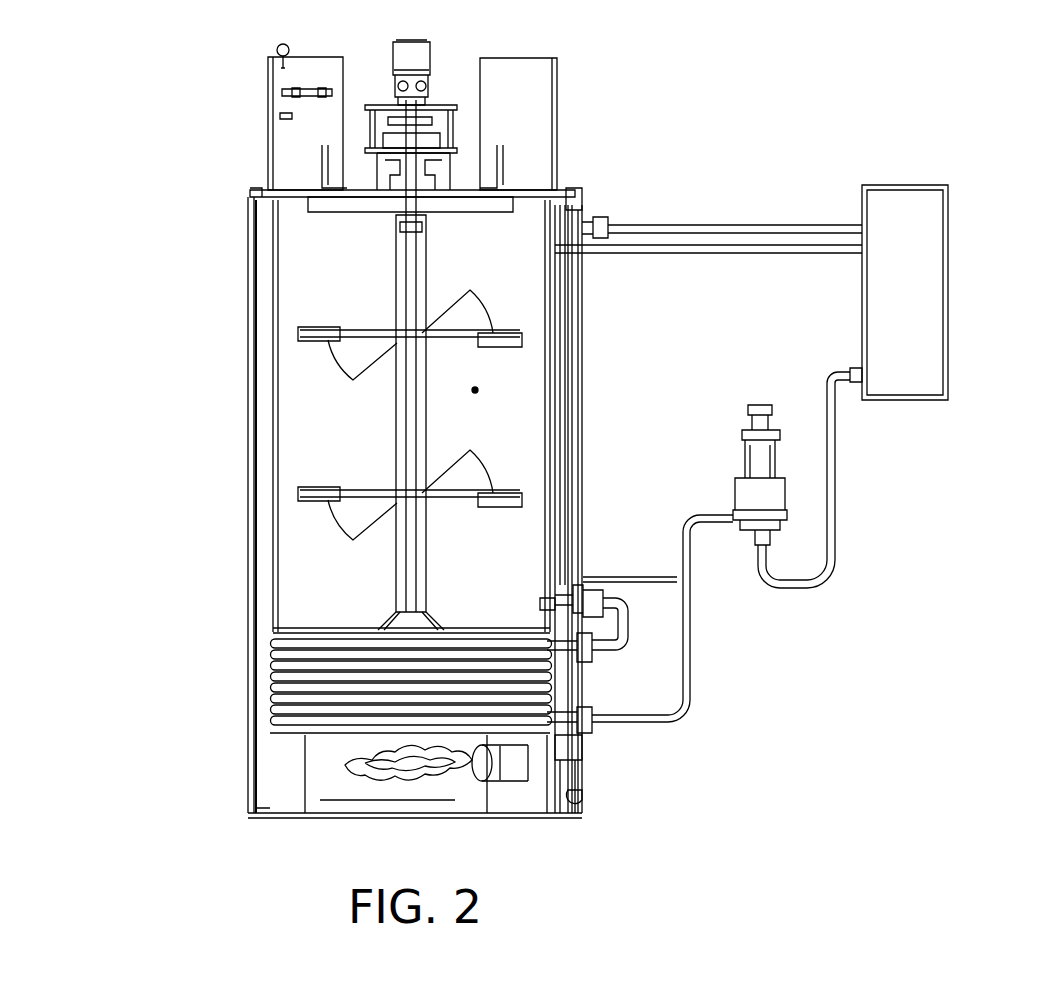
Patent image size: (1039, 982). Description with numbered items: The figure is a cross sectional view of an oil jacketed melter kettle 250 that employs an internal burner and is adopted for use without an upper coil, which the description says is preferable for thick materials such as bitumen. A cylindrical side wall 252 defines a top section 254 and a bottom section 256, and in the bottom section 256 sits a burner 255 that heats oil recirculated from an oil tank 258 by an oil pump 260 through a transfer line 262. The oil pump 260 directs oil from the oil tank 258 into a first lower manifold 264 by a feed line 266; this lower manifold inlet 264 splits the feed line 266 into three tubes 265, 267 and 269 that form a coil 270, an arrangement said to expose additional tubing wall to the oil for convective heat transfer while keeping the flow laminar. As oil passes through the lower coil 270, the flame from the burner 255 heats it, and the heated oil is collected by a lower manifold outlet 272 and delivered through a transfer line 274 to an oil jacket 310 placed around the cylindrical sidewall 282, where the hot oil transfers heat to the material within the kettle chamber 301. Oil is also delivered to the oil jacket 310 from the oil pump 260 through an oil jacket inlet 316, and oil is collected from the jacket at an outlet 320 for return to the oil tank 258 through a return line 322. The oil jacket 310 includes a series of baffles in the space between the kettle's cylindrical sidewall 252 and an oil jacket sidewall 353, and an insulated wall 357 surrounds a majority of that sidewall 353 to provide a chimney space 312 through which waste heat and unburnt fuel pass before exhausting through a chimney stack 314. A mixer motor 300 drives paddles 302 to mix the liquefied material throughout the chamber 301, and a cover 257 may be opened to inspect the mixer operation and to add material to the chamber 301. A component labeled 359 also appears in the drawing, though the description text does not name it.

The melter kettle 250 is at (234, 165).
The cylindrical side wall 252 is at (248, 262).
The top section 254 is at (247, 199).
The burner 255 is at (505, 775).
The bottom section 256 is at (247, 797).
The cover 257 is at (358, 180).
The oil tank 258 is at (953, 305).
The oil pump 260 is at (787, 490).
The transfer line 262 is at (835, 572).
The first lower manifold 264 is at (595, 728).
The tube 265 is at (560, 713).
The feed line 266 is at (688, 660).
The tube 267 is at (558, 720).
The tube 269 is at (548, 723).
The coil 270 is at (300, 693).
The lower manifold outlet 272 is at (592, 660).
The transfer line 274 is at (630, 622).
The cylindrical sidewall 282 is at (256, 318).
The mixer motor 300 is at (432, 62).
The kettle chamber 301 is at (470, 245).
The paddles 302 is at (328, 512).
The oil jacket 310 is at (255, 543).
The chimney space 312 is at (563, 508).
The chimney stack 314 is at (528, 83).
The oil jacket inlet 316 is at (578, 575).
The oil jacket outlet 320 is at (582, 248).
The return line 322 is at (792, 253).
The oil jacket sidewall 353 is at (580, 385).
The insulated wall 357 is at (585, 443).
The control panel 359 is at (287, 78).